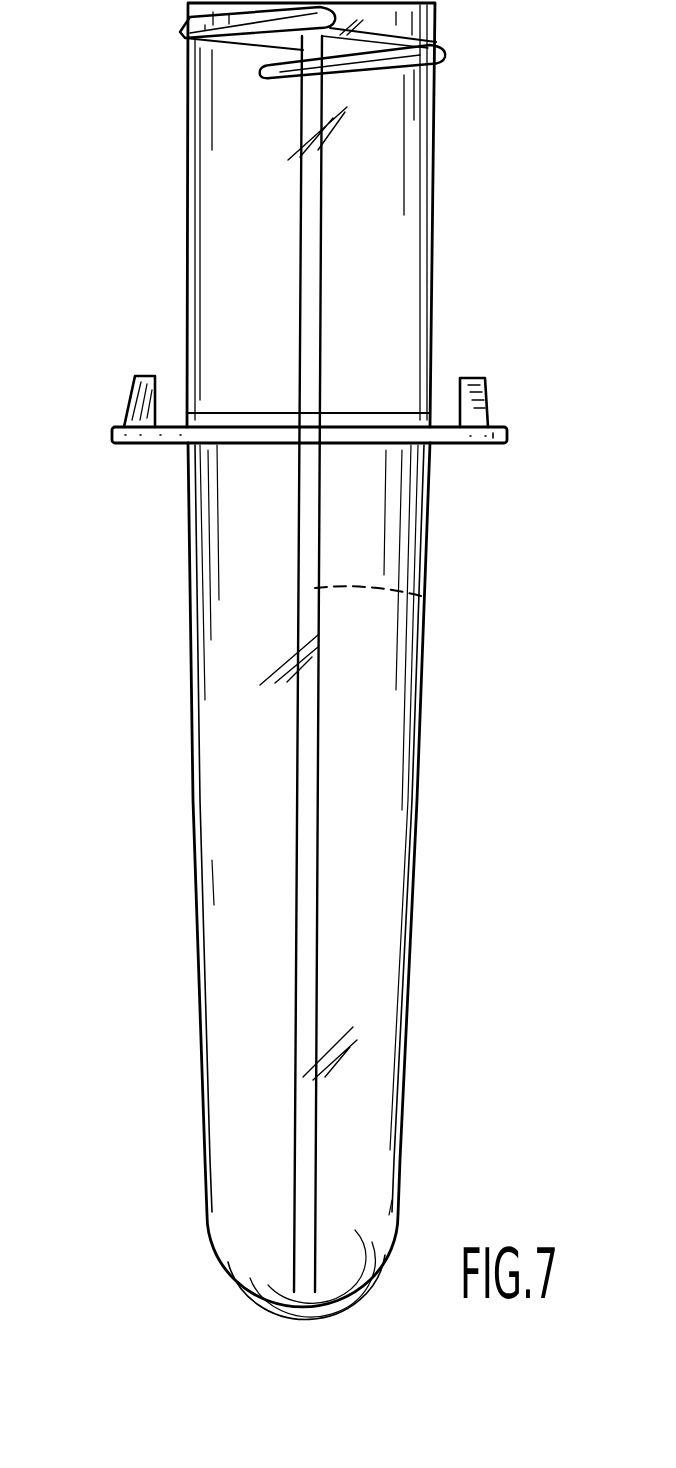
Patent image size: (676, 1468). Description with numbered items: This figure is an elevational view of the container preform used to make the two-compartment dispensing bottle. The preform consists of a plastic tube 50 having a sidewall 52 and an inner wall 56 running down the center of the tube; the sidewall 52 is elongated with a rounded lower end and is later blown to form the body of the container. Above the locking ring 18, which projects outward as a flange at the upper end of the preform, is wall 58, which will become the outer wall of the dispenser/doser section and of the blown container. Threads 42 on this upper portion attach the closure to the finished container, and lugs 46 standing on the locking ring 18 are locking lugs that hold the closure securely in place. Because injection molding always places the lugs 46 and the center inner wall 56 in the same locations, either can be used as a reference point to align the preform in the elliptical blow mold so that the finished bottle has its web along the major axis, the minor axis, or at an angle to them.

The locking ring 18 is at (505, 445).
The threads 42 is at (447, 49).
The lugs 46 is at (130, 403).
The plastic tube 50 is at (438, 290).
The sidewall 52 is at (418, 733).
The inner wall 56 is at (425, 597).
The wall 58 is at (397, 207).